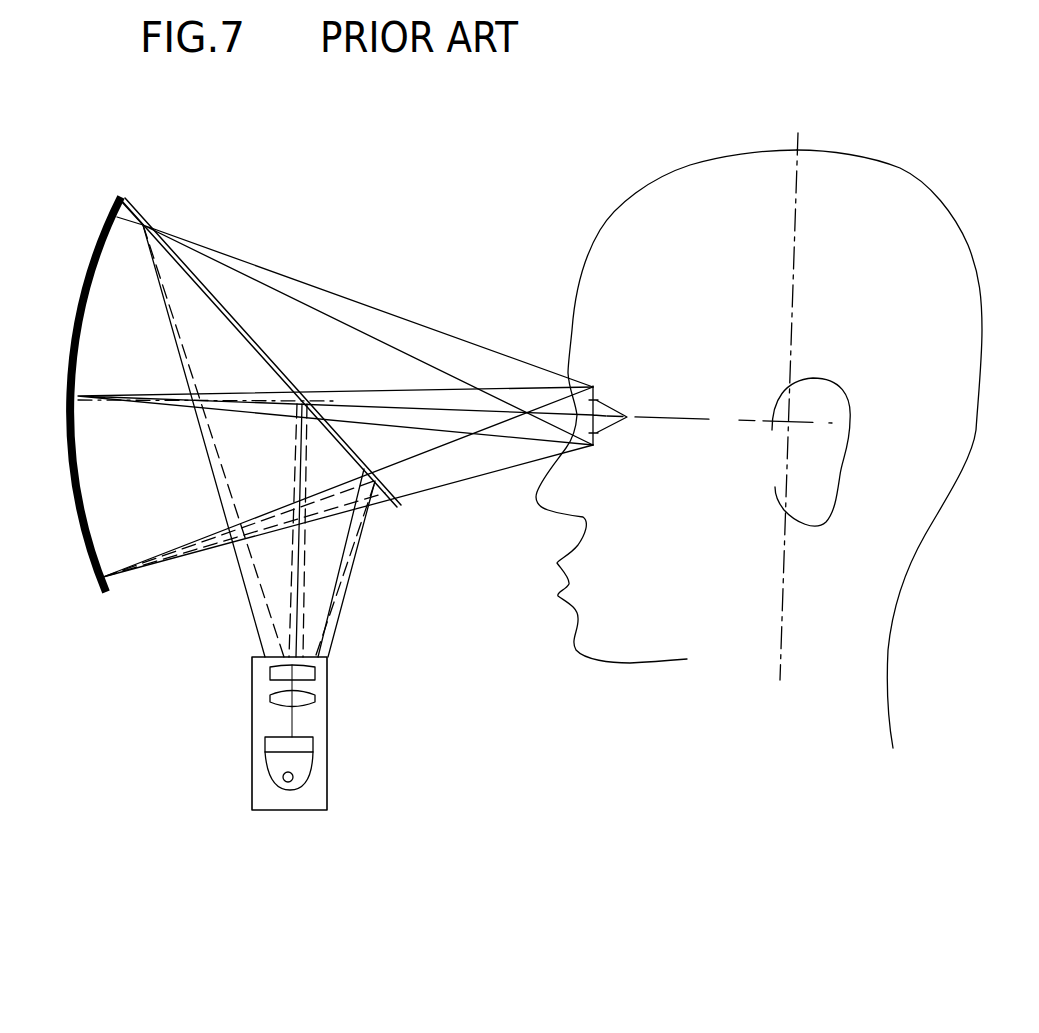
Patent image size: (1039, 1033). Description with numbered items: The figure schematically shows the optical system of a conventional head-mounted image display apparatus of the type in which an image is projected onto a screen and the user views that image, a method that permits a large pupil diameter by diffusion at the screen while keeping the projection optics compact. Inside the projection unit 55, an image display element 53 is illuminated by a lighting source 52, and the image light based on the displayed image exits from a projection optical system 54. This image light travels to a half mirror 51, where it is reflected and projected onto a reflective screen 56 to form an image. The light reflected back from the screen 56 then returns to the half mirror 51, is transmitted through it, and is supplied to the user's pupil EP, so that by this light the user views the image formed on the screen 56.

The half mirror 51 is at (399, 510).
The lighting source 52 is at (341, 782).
The image display element 53 is at (313, 743).
The projection optical system 54 is at (313, 663).
The light projecting unit 55 is at (355, 733).
The reflective screen 56 is at (106, 596).
The user's pupil EP is at (600, 415).